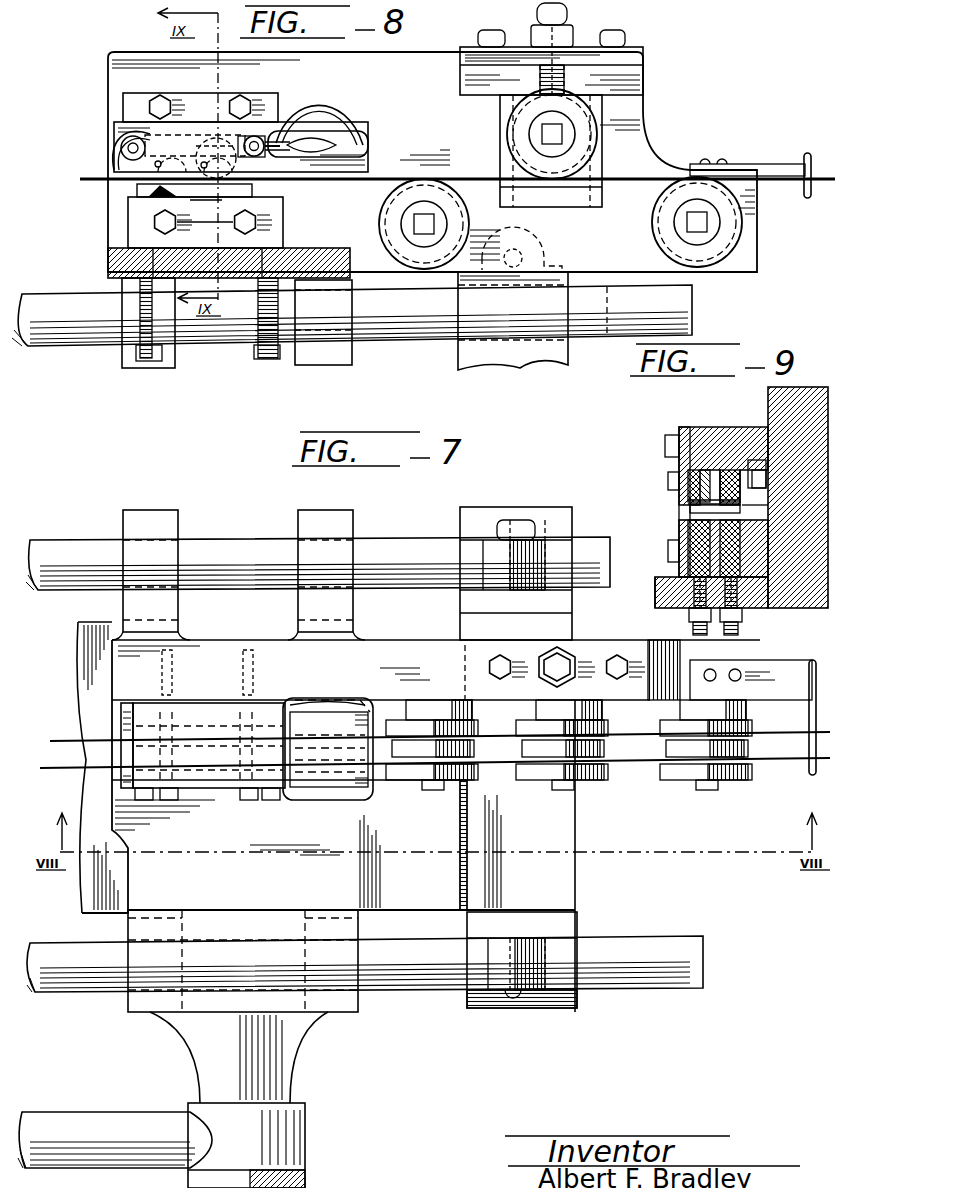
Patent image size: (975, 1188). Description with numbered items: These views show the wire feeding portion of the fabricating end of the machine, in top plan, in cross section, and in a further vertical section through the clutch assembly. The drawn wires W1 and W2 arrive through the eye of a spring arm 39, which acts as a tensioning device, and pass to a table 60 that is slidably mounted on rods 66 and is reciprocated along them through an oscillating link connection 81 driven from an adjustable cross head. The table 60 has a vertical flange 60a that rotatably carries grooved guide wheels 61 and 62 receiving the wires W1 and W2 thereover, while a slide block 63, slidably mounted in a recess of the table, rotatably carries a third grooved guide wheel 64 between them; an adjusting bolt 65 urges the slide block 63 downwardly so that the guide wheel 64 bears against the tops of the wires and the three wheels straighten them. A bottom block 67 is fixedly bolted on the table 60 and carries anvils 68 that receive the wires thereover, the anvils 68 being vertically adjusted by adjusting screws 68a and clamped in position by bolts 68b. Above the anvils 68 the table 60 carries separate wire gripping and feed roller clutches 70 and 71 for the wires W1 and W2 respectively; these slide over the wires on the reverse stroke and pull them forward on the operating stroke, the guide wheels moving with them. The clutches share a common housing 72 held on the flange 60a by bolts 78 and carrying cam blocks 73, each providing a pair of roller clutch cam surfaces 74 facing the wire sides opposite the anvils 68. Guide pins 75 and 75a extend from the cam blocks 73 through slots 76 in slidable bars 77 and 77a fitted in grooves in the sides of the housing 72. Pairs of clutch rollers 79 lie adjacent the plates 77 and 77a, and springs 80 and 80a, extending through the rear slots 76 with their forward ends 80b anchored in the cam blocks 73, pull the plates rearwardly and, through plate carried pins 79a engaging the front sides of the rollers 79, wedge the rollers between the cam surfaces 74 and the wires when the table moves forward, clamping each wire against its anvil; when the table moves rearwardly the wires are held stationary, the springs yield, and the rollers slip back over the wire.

In FIG. 8, the spring arm 39 is at (808, 198).
In FIG. 7, the spring arm 39 is at (816, 710).
In FIG. 8, the table 60 is at (670, 272).
In FIG. 9, the table 60 is at (664, 570).
In FIG. 7, the table 60 is at (140, 878).
In FIG. 8, the vertical flange 60a is at (432, 72).
In FIG. 9, the vertical flange 60a is at (800, 398).
In FIG. 7, the vertical flange 60a is at (385, 640).
In FIG. 8, the grooved guide wheel 61 is at (722, 250).
In FIG. 7, the grooved guide wheel 61 is at (730, 782).
In FIG. 8, the grooved guide wheel 62 is at (382, 228).
In FIG. 7, the grooved guide wheel 62 is at (400, 790).
In FIG. 8, the slide block 63 is at (602, 188).
In FIG. 8, the third grooved guide wheel 64 is at (520, 118).
In FIG. 7, the third grooved guide wheel 64 is at (608, 780).
In FIG. 8, the adjusting bolt 65 is at (560, 70).
In FIG. 7, the adjusting bolt 65 is at (565, 657).
In FIG. 8, the rods 66 is at (395, 325).
In FIG. 7, the rods 66 is at (393, 542).
In FIG. 8, the bottom block 67 is at (140, 242).
In FIG. 9, the bottom block 67 is at (760, 590).
In FIG. 8, the anvils 68 is at (162, 187).
In FIG. 9, the anvils 68 is at (700, 586).
In FIG. 8, the adjusting screws 68a is at (262, 352).
In FIG. 9, the adjusting screws 68a is at (708, 628).
In FIG. 8, the bolts 68b is at (240, 229).
In FIG. 9, the bolts 68b is at (679, 545).
In FIG. 8, the wire gripping and feed roller clutch 70 is at (100, 164).
In FIG. 9, the wire gripping and feed roller clutch 70 is at (668, 466).
In FIG. 7, the wire gripping and feed roller clutch 70 is at (118, 778).
In FIG. 9, the wire gripping and feed roller clutch 71 is at (760, 458).
In FIG. 7, the wire gripping and feed roller clutch 71 is at (110, 729).
In FIG. 8, the common housing 72 is at (200, 100).
In FIG. 9, the common housing 72 is at (718, 427).
In FIG. 8, the cam blocks 73 is at (168, 145).
In FIG. 9, the cam blocks 73 is at (702, 468).
In FIG. 8, the roller clutch cam surfaces 74 is at (206, 128).
In FIG. 8, the guide pin 75 is at (126, 140).
In FIG. 9, the guide pin 75 is at (668, 478).
In FIG. 9, the guide pin 75a is at (766, 480).
In FIG. 8, the slots 76 is at (116, 166).
In FIG. 8, the slidable bar 77 is at (362, 138).
In FIG. 9, the slidable bar 77 is at (688, 500).
In FIG. 9, the slidable bar 77a is at (768, 506).
In FIG. 8, the bolts 78 is at (160, 105).
In FIG. 9, the bolts 78 is at (668, 442).
In FIG. 8, the clutch rollers 79 is at (216, 190).
In FIG. 9, the clutch rollers 79 is at (690, 508).
In FIG. 8, the plate carried pins 79a is at (208, 166).
In FIG. 8, the spring 80 is at (325, 108).
In FIG. 7, the spring 80 is at (305, 800).
In FIG. 7, the spring 80a is at (322, 700).
In FIG. 8, the forward spring ends 80b is at (272, 150).
In FIG. 7, the oscillating link connection 81 is at (90, 1125).
In FIG. 8, the wire W1 is at (824, 170).
In FIG. 9, the wire W1 is at (690, 513).
In FIG. 7, the wire W1 is at (784, 760).
In FIG. 9, the wire W2 is at (740, 516).
In FIG. 7, the wire W2 is at (790, 733).